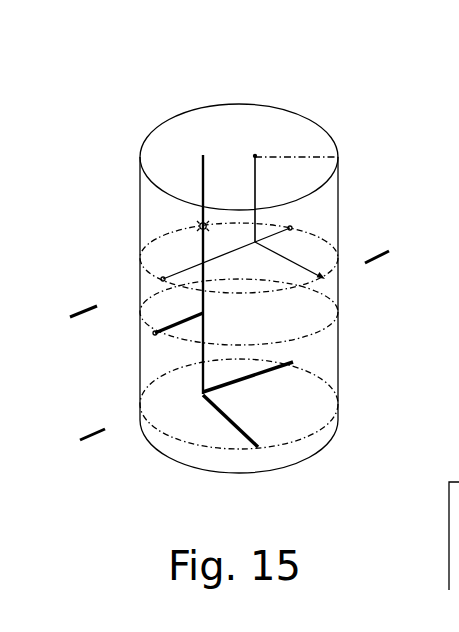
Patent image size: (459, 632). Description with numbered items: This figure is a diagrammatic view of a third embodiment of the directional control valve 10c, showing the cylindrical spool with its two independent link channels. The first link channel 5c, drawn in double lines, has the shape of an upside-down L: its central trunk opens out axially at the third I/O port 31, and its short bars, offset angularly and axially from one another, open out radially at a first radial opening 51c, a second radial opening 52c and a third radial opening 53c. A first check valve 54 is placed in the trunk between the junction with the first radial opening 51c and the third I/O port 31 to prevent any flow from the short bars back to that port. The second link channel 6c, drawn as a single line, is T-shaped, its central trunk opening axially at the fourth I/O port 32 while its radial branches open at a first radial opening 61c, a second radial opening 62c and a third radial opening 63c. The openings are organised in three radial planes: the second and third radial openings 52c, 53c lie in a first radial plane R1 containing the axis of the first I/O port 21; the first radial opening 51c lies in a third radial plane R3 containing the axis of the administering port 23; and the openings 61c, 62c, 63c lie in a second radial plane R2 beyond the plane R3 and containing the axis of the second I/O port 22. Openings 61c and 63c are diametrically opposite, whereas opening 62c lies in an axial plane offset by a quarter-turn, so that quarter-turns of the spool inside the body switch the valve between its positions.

The directional control valve 10c is at (301, 62).
The first link channel 5c is at (203, 172).
The second link channel 6c is at (338, 157).
The third I/O port 31 is at (202, 155).
The fourth I/O port 32 is at (257, 157).
The first check valve 54 is at (204, 224).
The third radial opening 63c is at (291, 227).
The first radial opening 61c is at (162, 279).
The second radial opening 62c is at (336, 276).
The first radial opening 51c is at (154, 333).
The second radial opening 52c is at (258, 447).
The third radial opening 53c is at (296, 362).
The first radial plane R1 is at (193, 443).
The second radial plane R2 is at (178, 233).
The third radial plane R3 is at (338, 328).
The first I/O port 21 is at (93, 440).
The second I/O port 22 is at (80, 303).
The administering port 23 is at (375, 264).